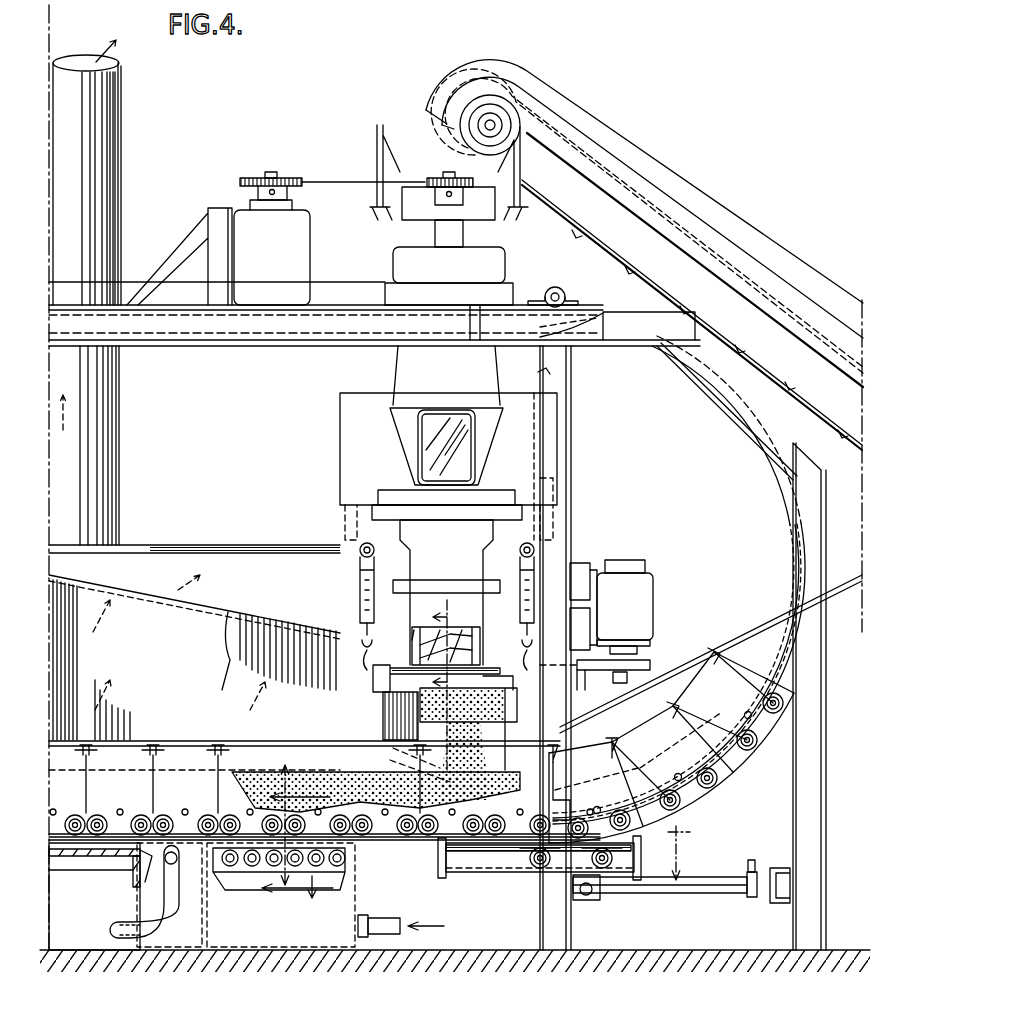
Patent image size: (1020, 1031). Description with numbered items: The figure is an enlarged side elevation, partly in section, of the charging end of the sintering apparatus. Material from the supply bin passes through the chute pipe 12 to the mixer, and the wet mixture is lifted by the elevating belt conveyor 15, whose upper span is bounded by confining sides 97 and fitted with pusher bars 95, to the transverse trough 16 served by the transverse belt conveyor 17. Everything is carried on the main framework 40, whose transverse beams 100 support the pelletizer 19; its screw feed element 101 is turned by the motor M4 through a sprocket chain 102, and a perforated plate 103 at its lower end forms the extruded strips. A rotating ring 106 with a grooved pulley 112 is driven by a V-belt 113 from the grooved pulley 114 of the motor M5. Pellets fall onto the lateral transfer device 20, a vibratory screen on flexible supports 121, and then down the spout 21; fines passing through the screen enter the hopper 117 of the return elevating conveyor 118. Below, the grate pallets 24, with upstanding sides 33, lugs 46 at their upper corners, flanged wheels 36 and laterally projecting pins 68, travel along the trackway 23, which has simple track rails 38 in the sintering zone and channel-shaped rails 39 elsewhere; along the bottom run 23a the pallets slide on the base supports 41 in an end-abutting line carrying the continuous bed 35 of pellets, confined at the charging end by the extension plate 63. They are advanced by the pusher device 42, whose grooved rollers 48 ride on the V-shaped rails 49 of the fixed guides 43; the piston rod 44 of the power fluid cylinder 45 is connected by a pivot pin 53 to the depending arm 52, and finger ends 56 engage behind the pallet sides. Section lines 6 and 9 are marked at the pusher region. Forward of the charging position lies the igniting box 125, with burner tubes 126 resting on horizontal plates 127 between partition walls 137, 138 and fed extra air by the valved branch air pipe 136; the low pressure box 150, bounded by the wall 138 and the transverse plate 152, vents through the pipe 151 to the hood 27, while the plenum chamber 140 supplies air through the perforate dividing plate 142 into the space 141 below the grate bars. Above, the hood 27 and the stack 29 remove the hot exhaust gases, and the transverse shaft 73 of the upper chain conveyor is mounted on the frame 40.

The stack 29 is at (122, 458).
The main framework 40 is at (212, 348).
The motor M4 is at (304, 252).
The sprocket chain 102 is at (308, 183).
The transverse trough 16 is at (381, 136).
The transverse belt conveyor 17 is at (412, 188).
The elevating belt conveyor 15 is at (667, 292).
The confining sides 97 is at (694, 195).
The pusher bars 95 is at (576, 236).
The transverse shaft 73 is at (556, 292).
The channel-shaped rails 39 is at (521, 348).
The vertical loop trackway 23 is at (651, 352).
The pelletizer 19 is at (366, 394).
The transverse beams 100 is at (345, 517).
The chute pipe 12 is at (453, 685).
The flexible supports 121 is at (376, 584).
The screw feed element 101 is at (482, 660).
The rotating ring 106 is at (392, 663).
The perforated plate 103 is at (398, 686).
The grooved pulley 112 is at (498, 685).
The lateral transfer device 20 is at (390, 716).
The delivery spout 21 is at (514, 744).
The extension plate 63 is at (478, 786).
The hopper 117 is at (404, 762).
The hood 27 is at (214, 548).
The bed of pellets 35 is at (266, 760).
The track rails 38 is at (178, 815).
The lugs 46 is at (153, 744).
The bottom run 23a is at (105, 817).
The flanged wheels 36 is at (762, 736).
The grate pallets 24 is at (92, 745).
The laterally-projecting pins 68 is at (598, 806).
The upstanding sides 33 is at (704, 762).
The finger ends 56 is at (566, 806).
The section line 6 is at (501, 858).
The section line 9 is at (297, 829).
The motor M5 is at (654, 597).
The grooved pulley 114 is at (650, 668).
The return elevating conveyor 118 is at (729, 630).
The V-belt 113 is at (588, 683).
The pusher device 42 is at (521, 880).
The fixed guides 43 is at (472, 873).
The grooved wheels 48 is at (528, 869).
The V-shaped rails 49 is at (506, 876).
The piston rod 44 is at (631, 892).
The power fluid cylinder 45 is at (712, 894).
The depending arm 52 is at (574, 882).
The pivot pin 53 is at (588, 896).
The plenum chamber 140 is at (82, 862).
The enclosed space 141 is at (56, 846).
The perforate dividing plate 142 is at (106, 872).
The transverse plate 152 is at (135, 901).
The low pressure box 150 is at (132, 915).
The pipe 151 is at (140, 950).
The transverse partition wall 138 is at (246, 895).
The burner tubes 126 is at (233, 873).
The horizontal plates 127 is at (336, 874).
The transverse partition wall 137 is at (357, 886).
The igniting chamber 125 is at (357, 898).
The valved branch air pipe 136 is at (409, 918).
The base supports 41 is at (286, 942).